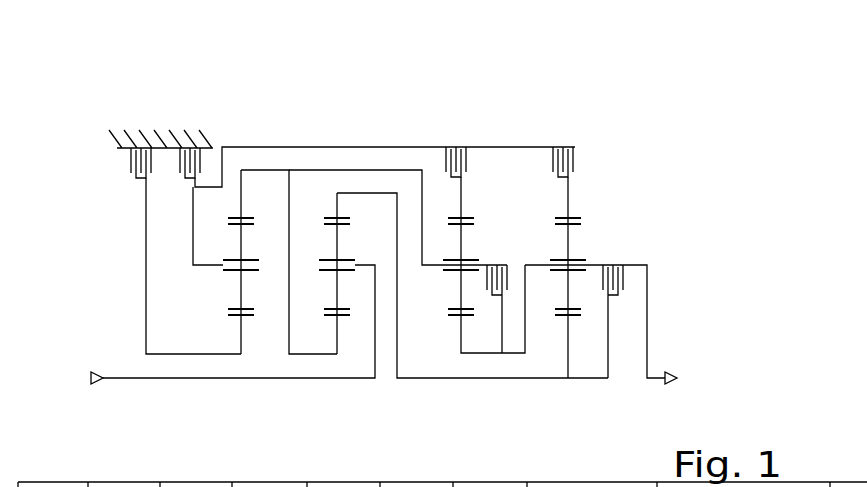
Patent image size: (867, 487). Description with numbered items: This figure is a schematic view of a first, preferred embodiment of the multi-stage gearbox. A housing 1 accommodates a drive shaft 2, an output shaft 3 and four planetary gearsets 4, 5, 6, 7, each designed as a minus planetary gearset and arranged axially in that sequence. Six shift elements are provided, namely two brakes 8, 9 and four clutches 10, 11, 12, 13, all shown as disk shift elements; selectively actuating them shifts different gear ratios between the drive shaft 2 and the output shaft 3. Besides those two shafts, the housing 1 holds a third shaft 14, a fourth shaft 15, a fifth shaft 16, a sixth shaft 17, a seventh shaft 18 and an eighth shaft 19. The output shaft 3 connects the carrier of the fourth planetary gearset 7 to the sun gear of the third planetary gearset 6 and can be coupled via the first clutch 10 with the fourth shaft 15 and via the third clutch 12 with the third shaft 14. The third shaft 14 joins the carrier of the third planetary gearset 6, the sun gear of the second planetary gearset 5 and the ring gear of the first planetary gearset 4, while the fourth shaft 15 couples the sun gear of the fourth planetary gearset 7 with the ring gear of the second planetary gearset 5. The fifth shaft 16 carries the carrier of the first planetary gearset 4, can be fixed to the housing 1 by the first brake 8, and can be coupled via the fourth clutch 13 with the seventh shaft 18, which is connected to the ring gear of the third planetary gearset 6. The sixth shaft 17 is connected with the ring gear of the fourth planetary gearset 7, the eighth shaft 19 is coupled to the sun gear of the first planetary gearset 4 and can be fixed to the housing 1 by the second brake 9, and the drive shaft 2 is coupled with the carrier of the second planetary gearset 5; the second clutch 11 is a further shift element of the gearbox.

The housing 1 is at (147, 148).
The drive shaft 2 is at (298, 378).
The output shaft 3 is at (645, 337).
The first planetary gearset 4 is at (243, 140).
The second planetary gearset 5 is at (338, 140).
The third planetary gearset 6 is at (461, 140).
The fourth planetary gearset 7 is at (569, 140).
The first brake 8 is at (192, 155).
The second brake 9 is at (132, 163).
The first clutch 10 is at (608, 300).
The second clutch 11 is at (575, 155).
The third clutch 12 is at (501, 297).
The fourth clutch 13 is at (459, 193).
The third shaft 14 is at (268, 170).
The fourth shaft 15 is at (413, 378).
The fifth shaft 16 is at (310, 147).
The sixth shaft 17 is at (567, 202).
The seventh shaft 18 is at (459, 195).
The eighth shaft 19 is at (145, 298).